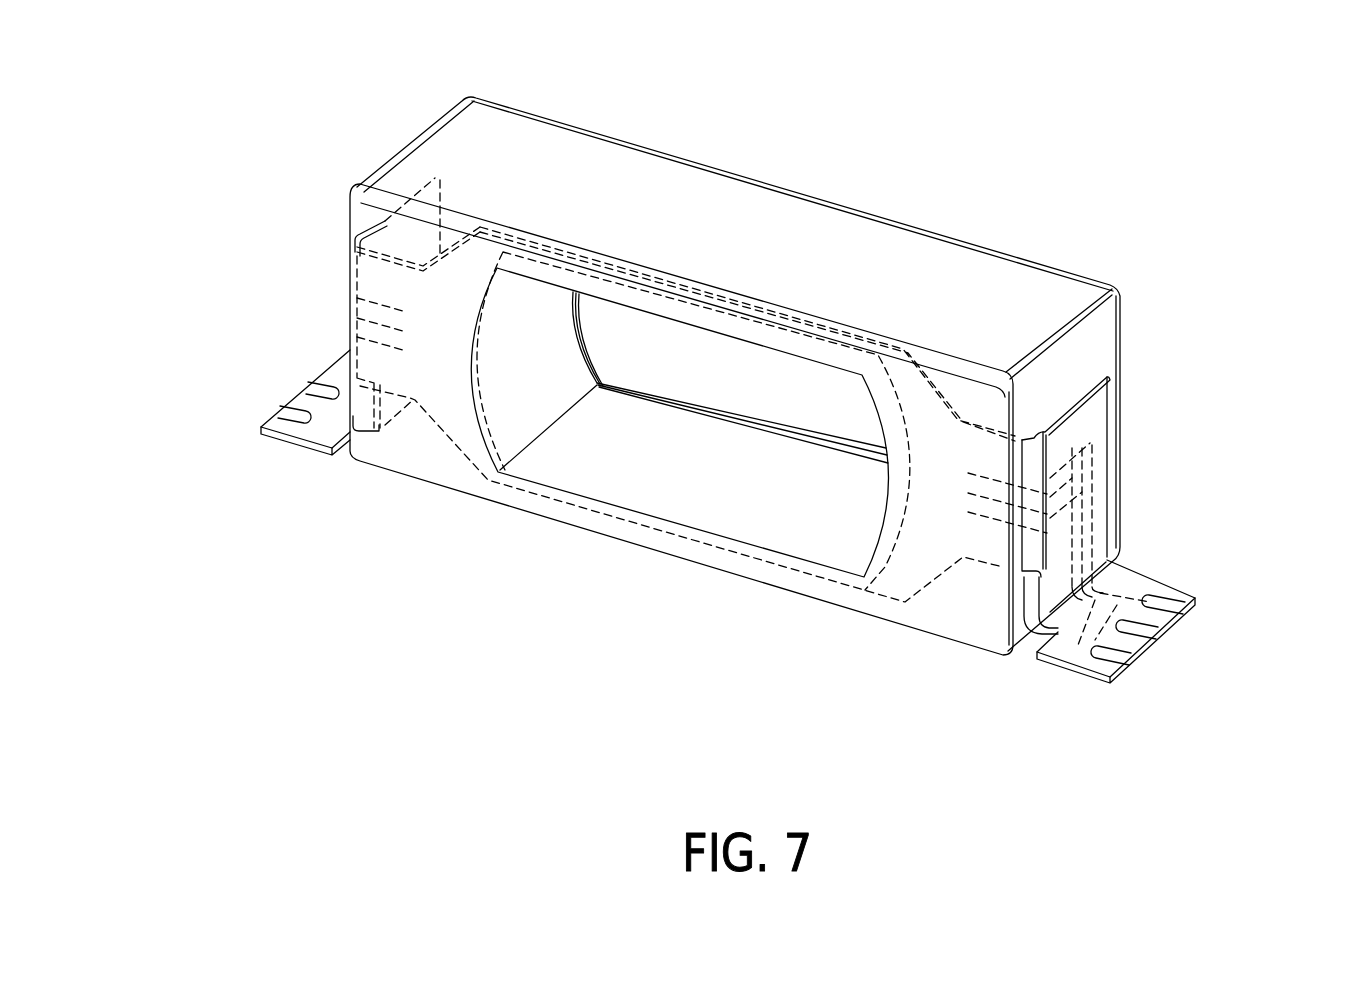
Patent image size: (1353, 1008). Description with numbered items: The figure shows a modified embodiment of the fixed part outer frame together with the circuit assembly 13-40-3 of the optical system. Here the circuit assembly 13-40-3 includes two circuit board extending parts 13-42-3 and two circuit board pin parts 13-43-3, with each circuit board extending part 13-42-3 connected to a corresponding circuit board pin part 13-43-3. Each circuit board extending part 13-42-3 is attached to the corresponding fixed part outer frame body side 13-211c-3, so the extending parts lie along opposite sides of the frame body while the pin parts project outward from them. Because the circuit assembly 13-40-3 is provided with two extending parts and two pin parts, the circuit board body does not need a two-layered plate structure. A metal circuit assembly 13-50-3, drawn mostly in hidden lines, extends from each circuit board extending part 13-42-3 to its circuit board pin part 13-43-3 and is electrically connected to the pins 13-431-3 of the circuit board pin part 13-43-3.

The circuit assembly 13-40-3 is at (1108, 362).
The fixed part outer frame body side 13-211c-3 is at (412, 142).
The circuit board extending part 13-42-3 is at (357, 275).
The circuit board pin part 13-43-3 is at (260, 428).
The pin 13-431-3 is at (287, 418).
The metal circuit assembly 13-50-3 is at (395, 345).